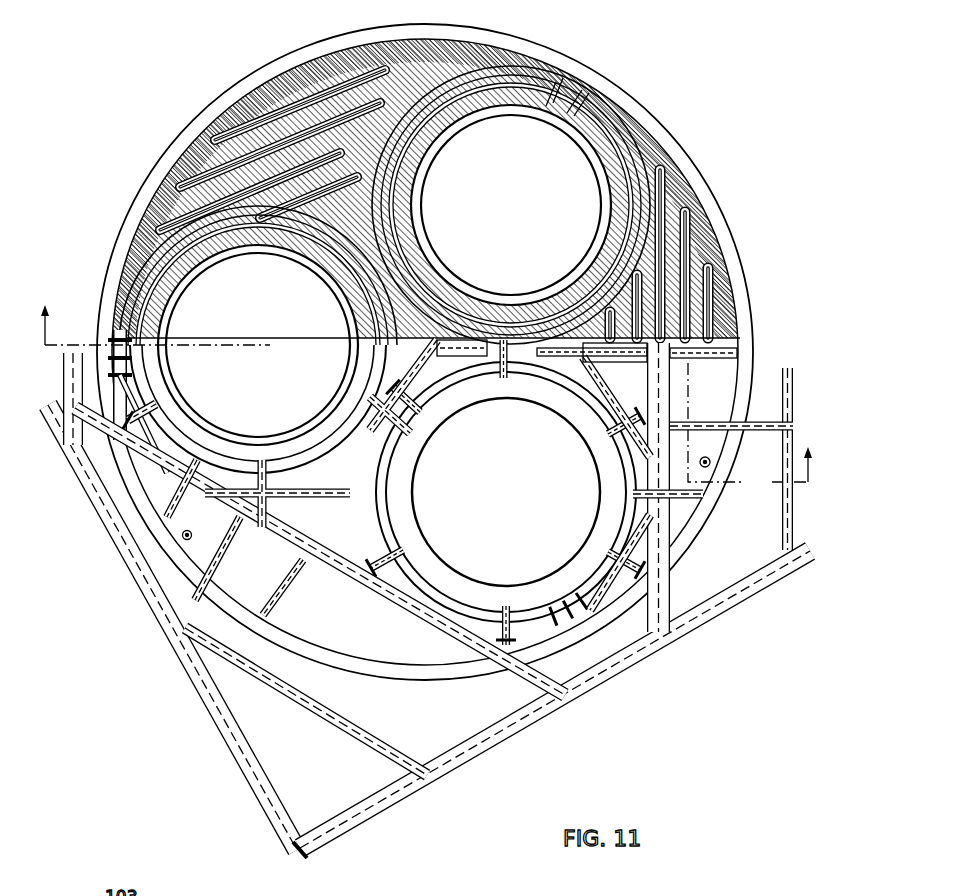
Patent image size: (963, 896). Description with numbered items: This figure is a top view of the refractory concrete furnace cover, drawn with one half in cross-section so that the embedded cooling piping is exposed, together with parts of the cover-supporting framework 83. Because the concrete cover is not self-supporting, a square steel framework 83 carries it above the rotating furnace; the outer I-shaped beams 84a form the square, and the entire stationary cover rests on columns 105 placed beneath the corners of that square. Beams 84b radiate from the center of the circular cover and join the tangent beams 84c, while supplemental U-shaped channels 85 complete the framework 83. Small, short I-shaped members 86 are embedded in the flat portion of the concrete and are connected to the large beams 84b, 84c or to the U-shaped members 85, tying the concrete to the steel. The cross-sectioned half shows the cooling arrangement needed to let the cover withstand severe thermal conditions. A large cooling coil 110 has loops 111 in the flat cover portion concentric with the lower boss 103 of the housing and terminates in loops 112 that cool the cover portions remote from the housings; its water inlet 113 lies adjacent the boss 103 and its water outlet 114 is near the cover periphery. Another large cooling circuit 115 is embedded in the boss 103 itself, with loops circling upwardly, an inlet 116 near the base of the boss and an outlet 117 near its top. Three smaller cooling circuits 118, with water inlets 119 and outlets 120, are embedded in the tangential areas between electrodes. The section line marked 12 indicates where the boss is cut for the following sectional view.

The cooling coil 110 is at (452, 87).
The loops 111 is at (508, 80).
The loops 112 is at (388, 45).
The water inlet 113 is at (553, 103).
The water outlet 114 is at (372, 42).
The cooling circuit 115 is at (617, 113).
The inlet 116 is at (120, 318).
The outlet 117 is at (567, 113).
The smaller cooling circuits 118 is at (325, 284).
The water inlets 119 is at (511, 205).
The outlets 120 is at (410, 178).
The lower boss 103 is at (258, 339).
The section line 12 is at (427, 382).
The structural framework 83 is at (374, 823).
The outer I-shaped beams 84a is at (243, 768).
The beams 84b is at (307, 532).
The tangent beams 84c is at (300, 560).
The U-shaped channels 85 is at (502, 616).
The small I-shaped beams 86 is at (265, 483).
The columns 105 is at (300, 853).